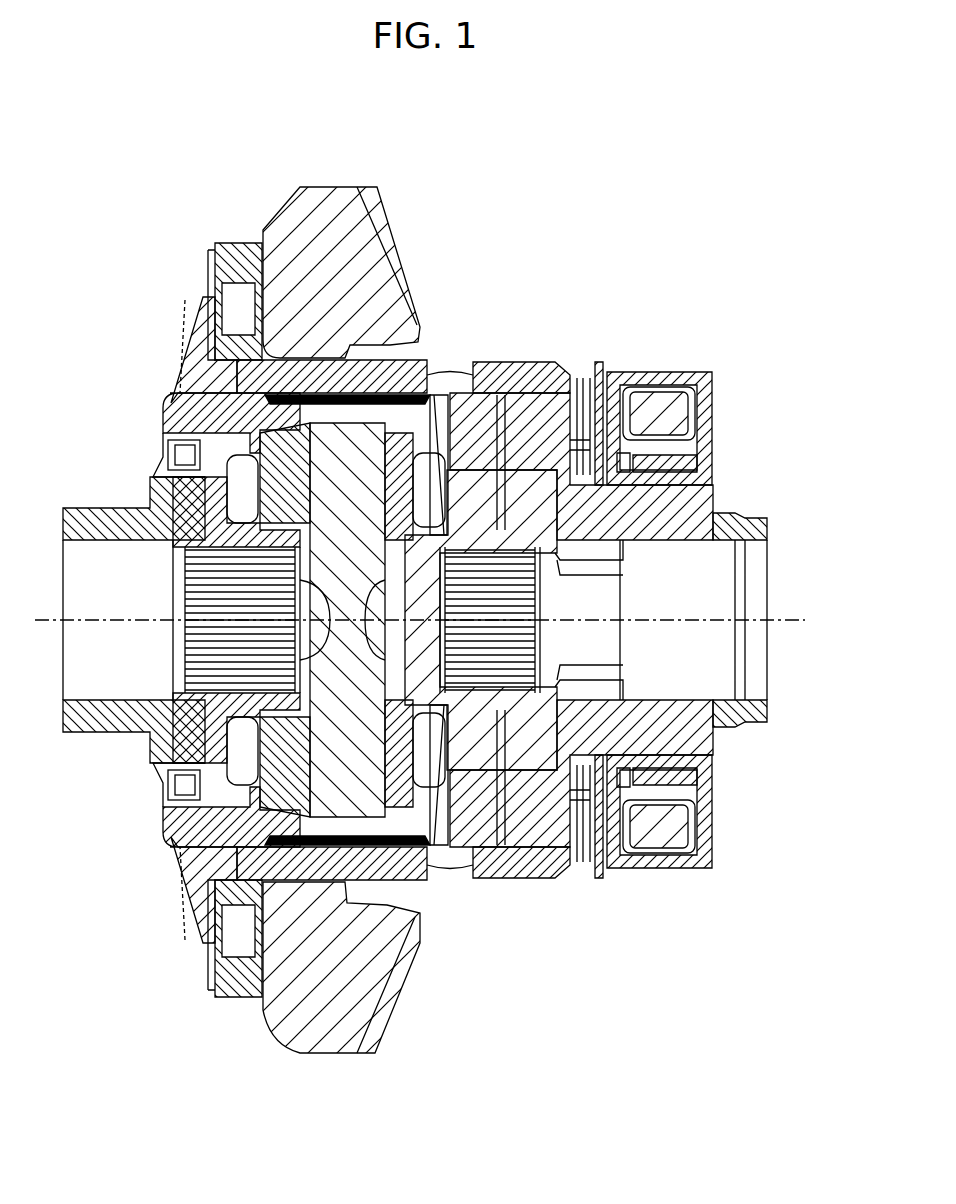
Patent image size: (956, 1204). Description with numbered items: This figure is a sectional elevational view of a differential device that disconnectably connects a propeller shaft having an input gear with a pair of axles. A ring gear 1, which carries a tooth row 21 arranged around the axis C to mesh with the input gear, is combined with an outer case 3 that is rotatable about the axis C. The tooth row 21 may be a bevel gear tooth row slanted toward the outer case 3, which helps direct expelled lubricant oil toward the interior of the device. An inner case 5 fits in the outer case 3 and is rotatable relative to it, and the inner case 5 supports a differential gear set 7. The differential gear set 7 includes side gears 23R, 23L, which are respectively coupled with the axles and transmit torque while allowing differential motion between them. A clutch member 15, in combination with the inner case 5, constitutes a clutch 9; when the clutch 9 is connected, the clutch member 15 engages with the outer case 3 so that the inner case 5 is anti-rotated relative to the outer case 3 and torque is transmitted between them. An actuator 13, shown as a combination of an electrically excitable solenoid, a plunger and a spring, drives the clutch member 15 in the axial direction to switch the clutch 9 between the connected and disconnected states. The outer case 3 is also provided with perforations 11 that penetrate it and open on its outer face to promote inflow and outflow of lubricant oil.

The ring gear 1 is at (290, 190).
The tooth row 21 is at (400, 223).
The differential gear set 7 is at (415, 357).
The inner case 5 is at (445, 374).
The outer case 3 is at (535, 362).
The perforations 11 is at (470, 882).
The clutch 9 is at (448, 893).
The clutch member 15 is at (585, 380).
The actuator 13 is at (675, 352).
The side gear 23L is at (175, 608).
The side gear 23R is at (560, 592).
The axis C is at (792, 612).